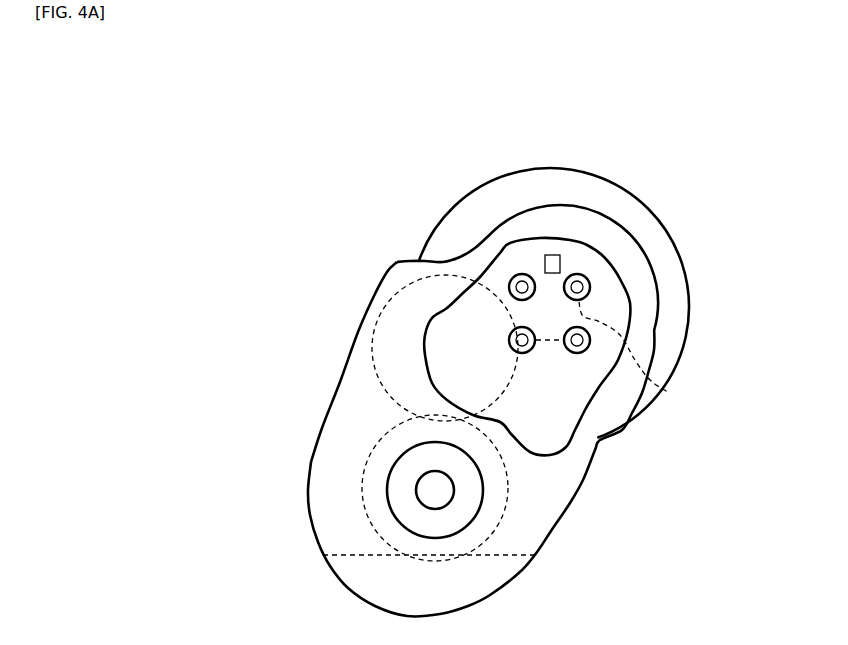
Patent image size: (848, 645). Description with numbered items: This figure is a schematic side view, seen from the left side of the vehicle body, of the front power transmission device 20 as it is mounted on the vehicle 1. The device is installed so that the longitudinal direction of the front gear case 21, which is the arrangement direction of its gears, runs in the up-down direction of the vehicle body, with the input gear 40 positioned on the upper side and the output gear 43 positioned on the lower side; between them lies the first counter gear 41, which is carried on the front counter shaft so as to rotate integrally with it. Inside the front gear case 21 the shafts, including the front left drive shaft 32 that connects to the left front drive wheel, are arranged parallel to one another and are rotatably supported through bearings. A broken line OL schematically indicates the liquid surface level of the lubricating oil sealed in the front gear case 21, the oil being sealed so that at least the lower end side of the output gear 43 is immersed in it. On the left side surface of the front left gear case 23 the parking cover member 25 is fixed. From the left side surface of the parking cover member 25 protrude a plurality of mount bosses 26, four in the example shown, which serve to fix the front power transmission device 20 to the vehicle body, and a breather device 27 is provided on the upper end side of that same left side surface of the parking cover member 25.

The vehicle 1 is at (577, 88).
The front power transmission device 20 is at (520, 135).
The front gear case 21 is at (372, 248).
The front left gear case 23 is at (344, 383).
The parking cover member 25 is at (601, 266).
The mount bosses 26 is at (522, 273).
The breather device 27 is at (561, 261).
The front left drive shaft 32 is at (429, 487).
The input gear 40 is at (670, 393).
The first counter gear 41 is at (378, 290).
The output gear 43 is at (507, 503).
The liquid surface level of lubricating oil OL is at (449, 560).